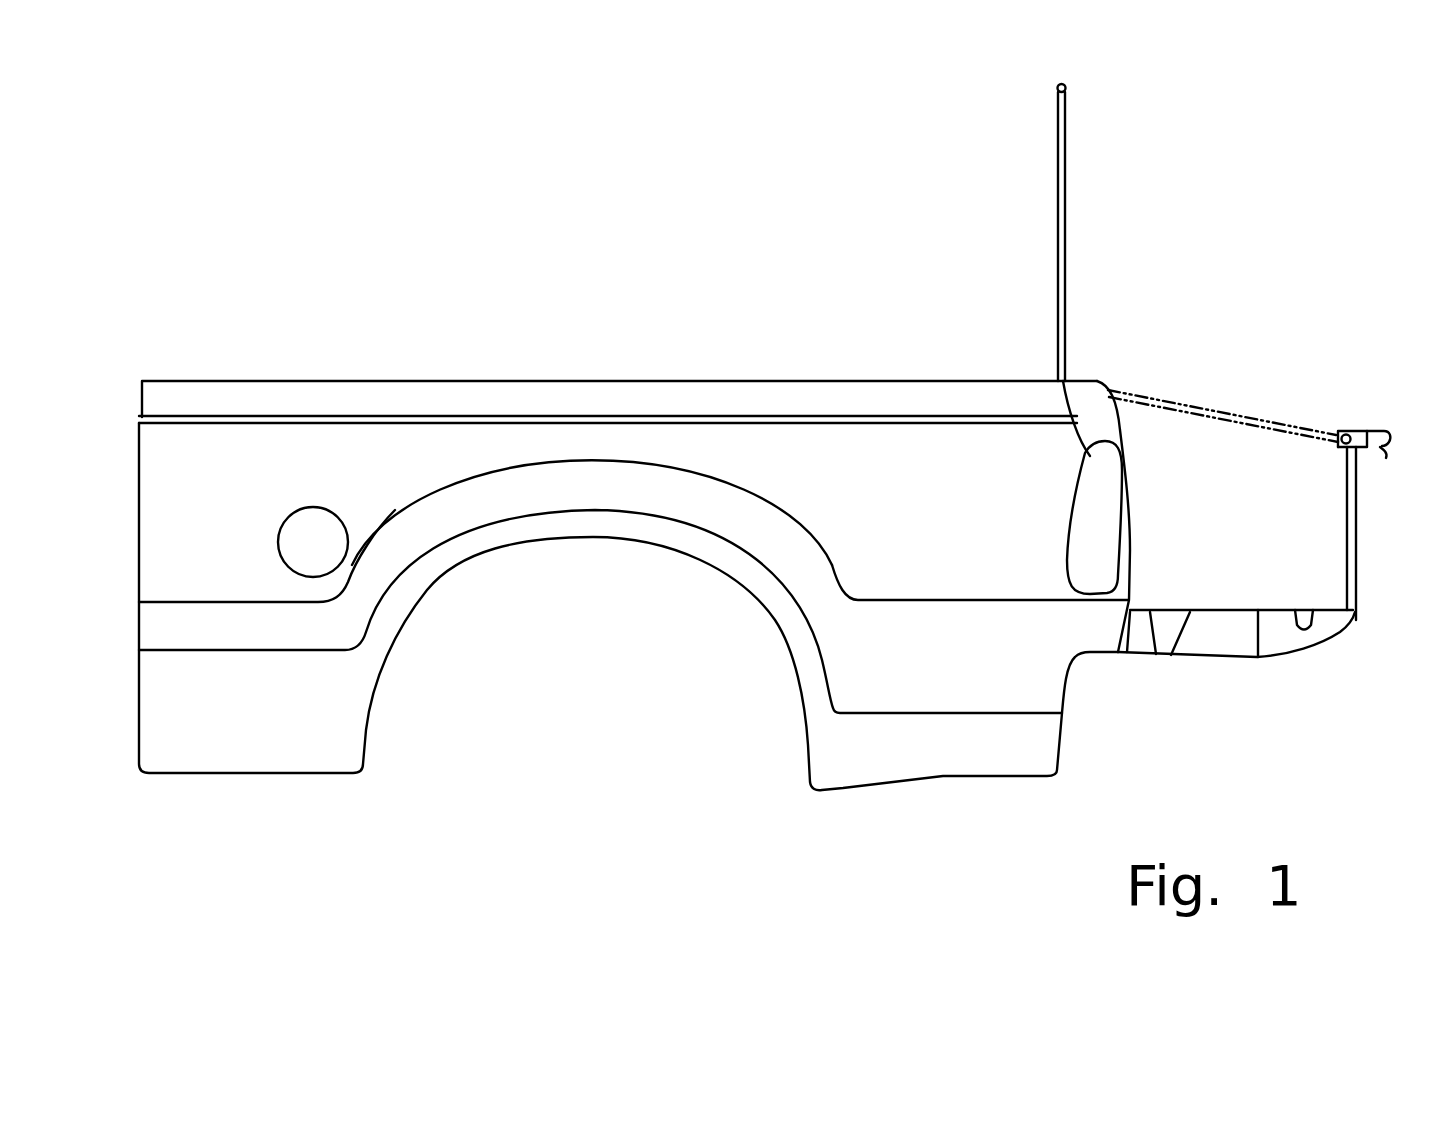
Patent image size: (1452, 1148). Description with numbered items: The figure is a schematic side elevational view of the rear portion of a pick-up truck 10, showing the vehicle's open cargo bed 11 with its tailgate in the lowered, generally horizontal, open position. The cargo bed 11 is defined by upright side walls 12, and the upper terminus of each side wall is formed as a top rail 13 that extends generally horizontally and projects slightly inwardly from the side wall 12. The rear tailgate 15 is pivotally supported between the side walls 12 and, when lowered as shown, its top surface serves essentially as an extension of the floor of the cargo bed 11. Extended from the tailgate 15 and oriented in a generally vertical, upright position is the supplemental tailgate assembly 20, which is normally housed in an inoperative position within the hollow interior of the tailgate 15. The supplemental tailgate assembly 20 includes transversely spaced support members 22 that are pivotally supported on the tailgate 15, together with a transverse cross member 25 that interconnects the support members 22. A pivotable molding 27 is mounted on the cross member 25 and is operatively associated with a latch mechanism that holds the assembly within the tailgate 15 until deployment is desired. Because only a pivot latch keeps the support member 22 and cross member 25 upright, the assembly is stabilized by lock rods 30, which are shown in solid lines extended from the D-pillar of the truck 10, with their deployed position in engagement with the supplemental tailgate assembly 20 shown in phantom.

The pick-up truck 10 is at (362, 256).
The cargo bed 11 is at (828, 343).
The side walls 12 is at (238, 407).
The top rail 13 is at (428, 381).
The tailgate 15 is at (1225, 643).
The supplemental tailgate assembly 20 is at (1363, 360).
The support members 22 is at (1347, 542).
The cross member 25 is at (1355, 436).
The pivotable molding 27 is at (1388, 444).
The lock rods 30 is at (1065, 222).